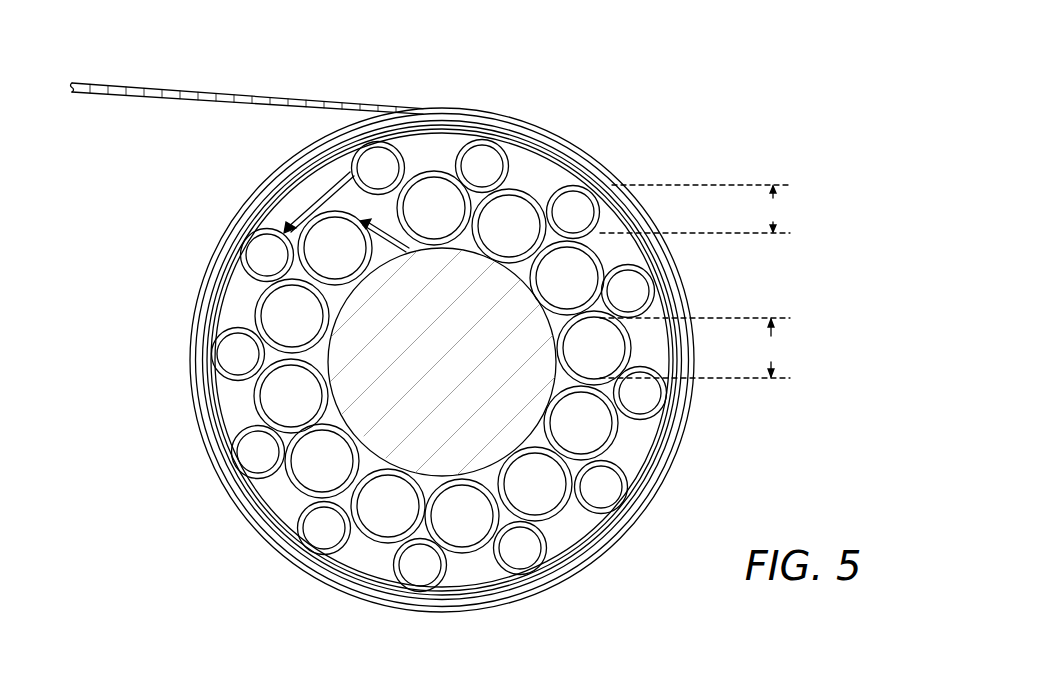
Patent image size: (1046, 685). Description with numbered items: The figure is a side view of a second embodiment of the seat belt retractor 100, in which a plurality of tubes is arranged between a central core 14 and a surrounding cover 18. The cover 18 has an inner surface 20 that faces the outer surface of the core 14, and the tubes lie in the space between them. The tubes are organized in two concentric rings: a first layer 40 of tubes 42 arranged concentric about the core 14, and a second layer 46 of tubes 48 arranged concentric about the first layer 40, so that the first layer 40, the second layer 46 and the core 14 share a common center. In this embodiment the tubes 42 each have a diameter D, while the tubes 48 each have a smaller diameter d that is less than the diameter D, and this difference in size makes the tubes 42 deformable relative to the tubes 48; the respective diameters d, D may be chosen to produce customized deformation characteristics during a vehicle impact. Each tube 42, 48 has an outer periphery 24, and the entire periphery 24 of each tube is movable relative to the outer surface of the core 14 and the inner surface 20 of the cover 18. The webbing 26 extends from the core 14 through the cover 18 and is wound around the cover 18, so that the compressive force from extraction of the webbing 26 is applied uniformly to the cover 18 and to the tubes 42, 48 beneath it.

The seat belt retractor 100 is at (755, 55).
The core 14 is at (451, 372).
The cover 18 is at (364, 136).
The inner surface 20 is at (421, 136).
The outer periphery 24 is at (446, 173).
The webbing 26 is at (150, 84).
The first layer 40 is at (408, 253).
The tubes 42 is at (426, 220).
The second layer 46 is at (307, 208).
The tubes 48 is at (371, 180).
The diameter d is at (695, 209).
The diameter D is at (695, 348).